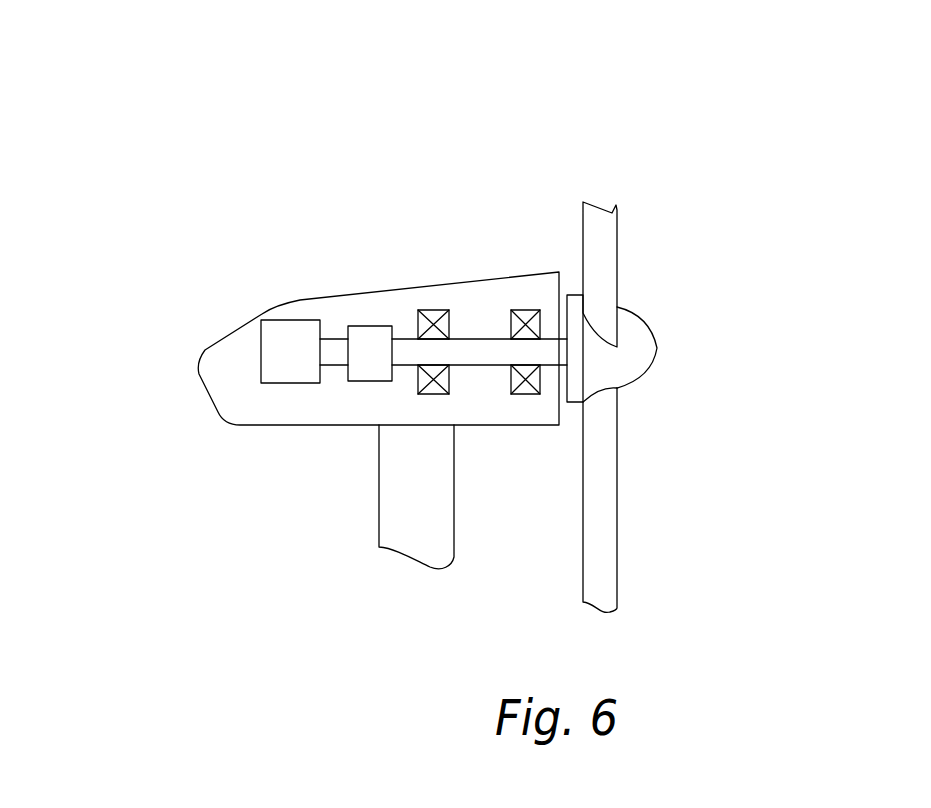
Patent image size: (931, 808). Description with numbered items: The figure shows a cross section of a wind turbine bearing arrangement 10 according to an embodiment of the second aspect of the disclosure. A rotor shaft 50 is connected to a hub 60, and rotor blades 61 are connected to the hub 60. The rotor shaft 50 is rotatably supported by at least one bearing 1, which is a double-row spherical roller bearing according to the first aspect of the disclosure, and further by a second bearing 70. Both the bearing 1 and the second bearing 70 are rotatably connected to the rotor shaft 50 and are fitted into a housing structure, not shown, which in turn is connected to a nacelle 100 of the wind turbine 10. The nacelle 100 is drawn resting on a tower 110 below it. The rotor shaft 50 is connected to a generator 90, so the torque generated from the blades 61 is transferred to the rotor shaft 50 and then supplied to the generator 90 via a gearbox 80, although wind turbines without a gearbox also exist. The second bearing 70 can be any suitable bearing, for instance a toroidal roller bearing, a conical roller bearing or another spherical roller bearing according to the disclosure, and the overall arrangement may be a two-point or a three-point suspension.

The wind turbine bearing arrangement 10 is at (606, 106).
The nacelle 100 is at (197, 370).
The tower 110 is at (428, 547).
The generator 90 is at (278, 347).
The gearbox 80 is at (362, 367).
The rotor shaft 50 is at (470, 336).
The second bearing 70 is at (435, 395).
The bearing 1 is at (527, 394).
The hub 60 is at (637, 360).
The rotor blades 61 is at (605, 505).